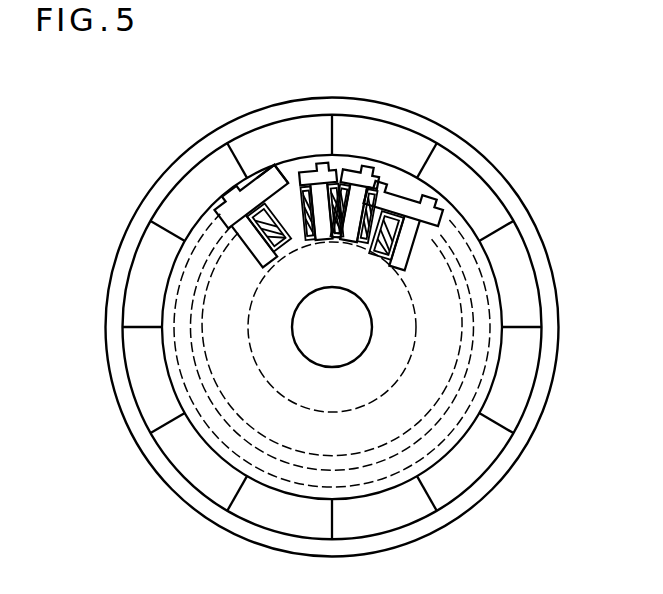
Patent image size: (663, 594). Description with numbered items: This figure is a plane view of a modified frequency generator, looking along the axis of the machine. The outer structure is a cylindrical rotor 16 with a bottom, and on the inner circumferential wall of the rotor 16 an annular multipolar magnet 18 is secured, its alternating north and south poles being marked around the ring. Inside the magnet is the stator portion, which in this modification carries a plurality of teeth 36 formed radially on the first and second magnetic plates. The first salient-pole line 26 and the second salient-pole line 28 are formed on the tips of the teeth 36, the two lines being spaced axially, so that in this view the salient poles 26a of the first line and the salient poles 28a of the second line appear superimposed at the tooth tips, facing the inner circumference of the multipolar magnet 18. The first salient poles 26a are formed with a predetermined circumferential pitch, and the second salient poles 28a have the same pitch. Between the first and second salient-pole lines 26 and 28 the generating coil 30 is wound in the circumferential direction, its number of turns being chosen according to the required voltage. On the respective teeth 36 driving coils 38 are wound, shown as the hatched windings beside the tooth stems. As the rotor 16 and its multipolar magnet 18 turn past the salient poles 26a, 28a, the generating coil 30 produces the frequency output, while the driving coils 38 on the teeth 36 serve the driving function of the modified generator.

The rotor 16 is at (538, 428).
The multipolar magnet 18 is at (460, 482).
The first salient-pole line 26 is at (226, 242).
The second salient-pole line 28 is at (217, 229).
The salient pole 26a is at (319, 153).
The second salient pole 28a is at (250, 172).
The generating coil 30 is at (262, 188).
The teeth 36 is at (335, 208).
The driving coil 38 is at (280, 238).